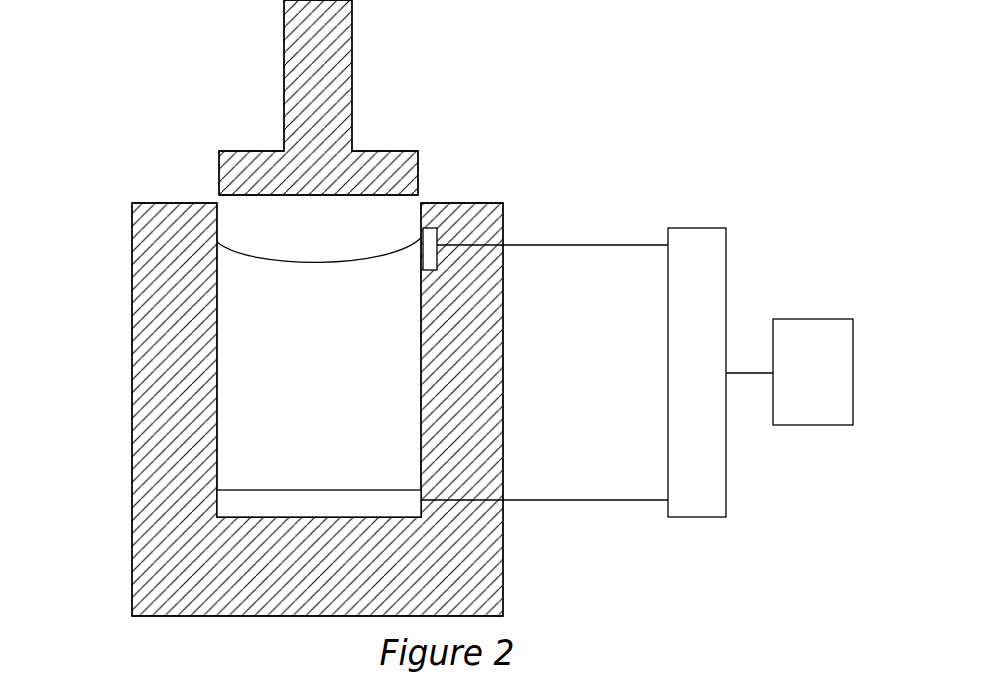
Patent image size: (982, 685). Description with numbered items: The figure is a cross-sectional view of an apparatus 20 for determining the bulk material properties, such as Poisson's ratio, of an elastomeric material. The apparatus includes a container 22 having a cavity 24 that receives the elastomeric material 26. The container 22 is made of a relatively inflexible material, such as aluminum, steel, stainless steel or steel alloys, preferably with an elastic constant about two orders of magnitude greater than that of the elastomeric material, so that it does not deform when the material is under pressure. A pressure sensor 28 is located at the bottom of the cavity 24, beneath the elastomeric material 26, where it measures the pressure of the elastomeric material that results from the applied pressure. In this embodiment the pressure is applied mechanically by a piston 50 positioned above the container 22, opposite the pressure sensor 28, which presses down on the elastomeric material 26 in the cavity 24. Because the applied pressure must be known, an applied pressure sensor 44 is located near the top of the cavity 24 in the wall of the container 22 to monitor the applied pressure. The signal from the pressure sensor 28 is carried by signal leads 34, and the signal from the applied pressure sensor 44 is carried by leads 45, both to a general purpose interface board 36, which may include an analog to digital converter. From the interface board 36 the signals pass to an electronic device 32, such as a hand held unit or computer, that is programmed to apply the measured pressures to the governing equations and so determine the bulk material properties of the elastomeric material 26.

The apparatus 20 is at (553, 115).
The container 22 is at (505, 344).
The cavity 24 is at (242, 230).
The elastomeric material 26 is at (307, 383).
The pressure sensor 28 is at (227, 508).
The electronic device 32 is at (806, 319).
The signal leads 34 is at (610, 502).
The general purpose interface board 36 is at (697, 228).
The applied pressure sensor 44 is at (430, 232).
The leads 45 is at (568, 243).
The piston 50 is at (380, 158).